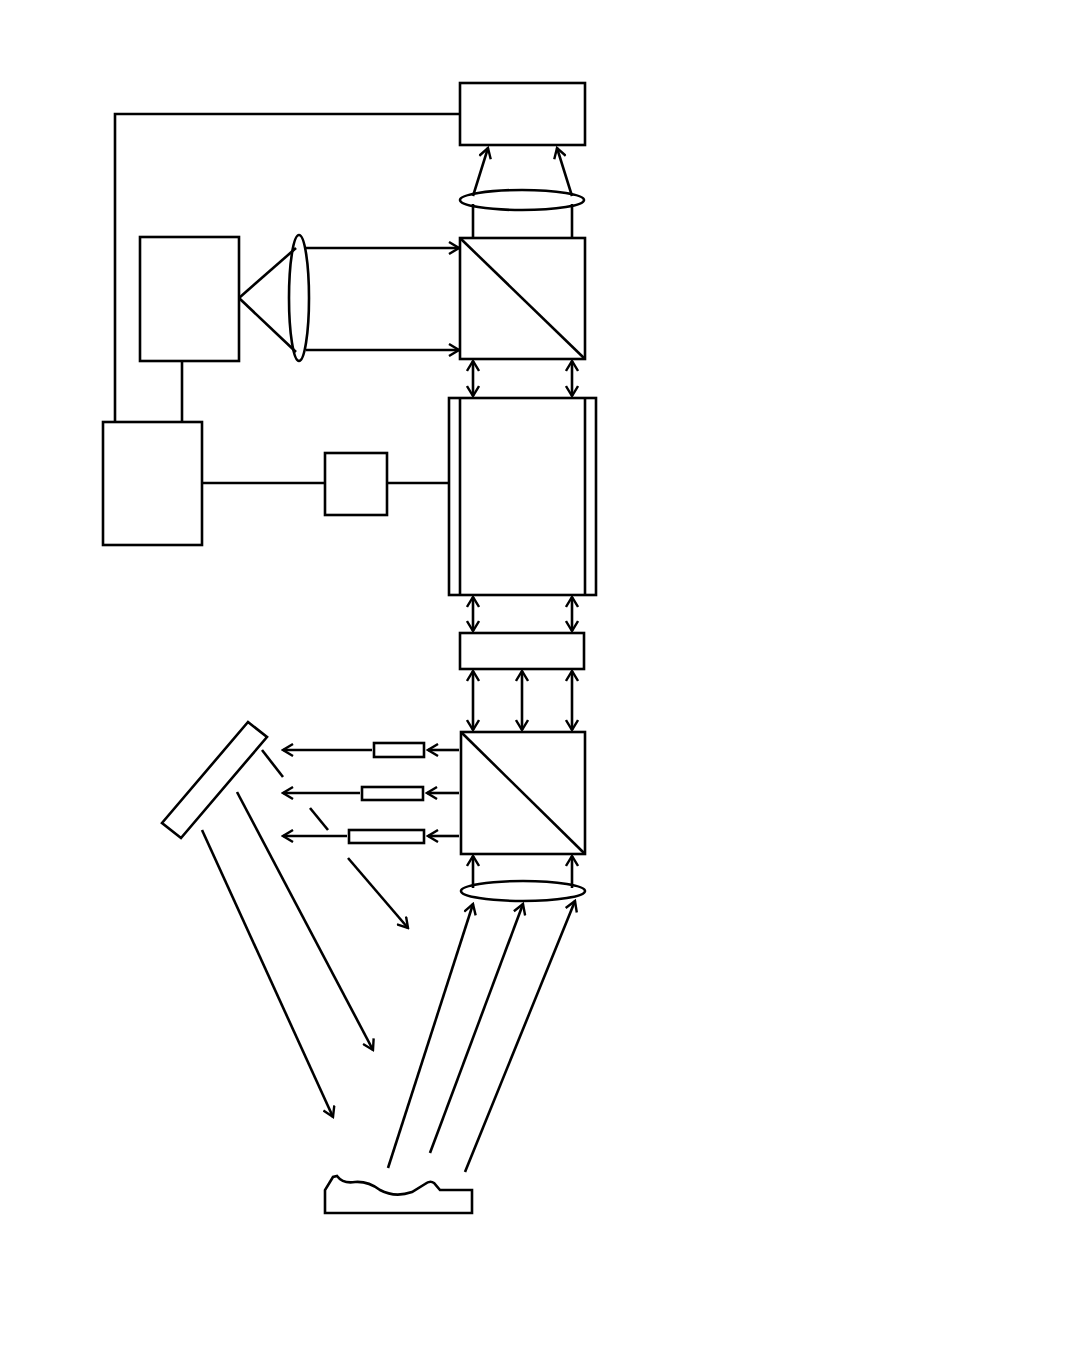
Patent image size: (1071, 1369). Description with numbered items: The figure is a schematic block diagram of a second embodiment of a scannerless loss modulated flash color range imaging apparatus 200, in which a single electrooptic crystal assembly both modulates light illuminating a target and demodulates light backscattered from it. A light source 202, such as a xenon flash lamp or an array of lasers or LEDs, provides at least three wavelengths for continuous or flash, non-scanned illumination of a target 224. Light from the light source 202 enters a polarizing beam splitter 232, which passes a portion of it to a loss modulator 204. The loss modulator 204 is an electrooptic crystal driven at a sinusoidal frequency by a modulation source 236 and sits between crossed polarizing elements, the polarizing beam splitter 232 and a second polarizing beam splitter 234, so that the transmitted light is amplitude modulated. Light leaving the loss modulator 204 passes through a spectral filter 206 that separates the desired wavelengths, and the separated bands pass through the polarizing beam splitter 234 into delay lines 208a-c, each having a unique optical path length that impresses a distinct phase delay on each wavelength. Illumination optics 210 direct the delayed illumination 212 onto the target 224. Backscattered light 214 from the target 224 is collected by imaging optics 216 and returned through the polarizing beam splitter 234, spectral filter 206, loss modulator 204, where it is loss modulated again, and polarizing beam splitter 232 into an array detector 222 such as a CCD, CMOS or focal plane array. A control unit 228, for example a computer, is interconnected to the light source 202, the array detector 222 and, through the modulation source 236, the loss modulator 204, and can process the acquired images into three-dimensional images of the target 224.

The scannerless loss modulated flash color range imaging apparatus 200 is at (752, 48).
The light source 202 is at (207, 309).
The loss modulator 204 is at (541, 504).
The spectral filter 206 is at (541, 663).
The delay lines 208a-c is at (390, 707).
The illumination optics 210 is at (222, 765).
The reflected light beams 212 is at (226, 958).
The backscattered light 214 is at (573, 980).
The imaging optics 216 is at (599, 892).
The array detector 222 is at (541, 125).
The target 224 is at (340, 1197).
The control unit 228 is at (170, 494).
The polarizing beam splitter 232 is at (599, 276).
The polarizing beam splitter 234 is at (598, 778).
The modulation source 236 is at (374, 495).